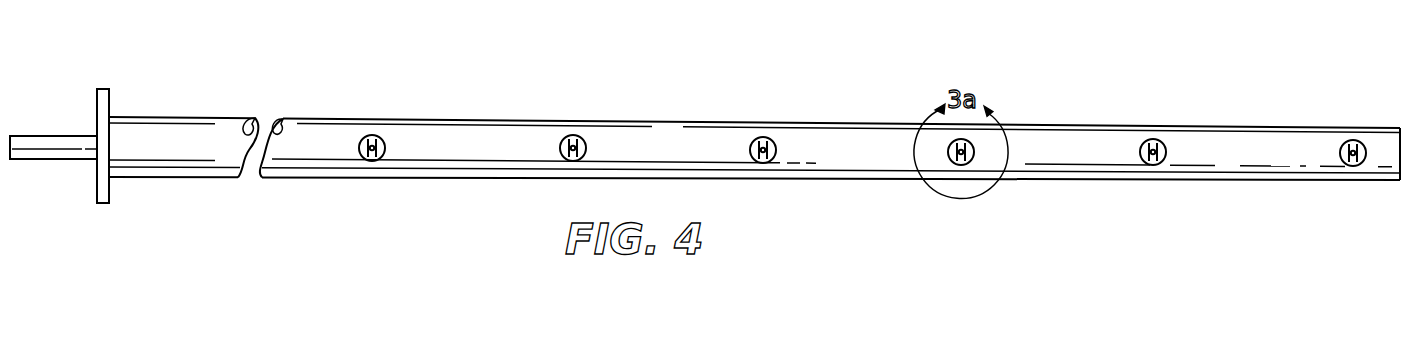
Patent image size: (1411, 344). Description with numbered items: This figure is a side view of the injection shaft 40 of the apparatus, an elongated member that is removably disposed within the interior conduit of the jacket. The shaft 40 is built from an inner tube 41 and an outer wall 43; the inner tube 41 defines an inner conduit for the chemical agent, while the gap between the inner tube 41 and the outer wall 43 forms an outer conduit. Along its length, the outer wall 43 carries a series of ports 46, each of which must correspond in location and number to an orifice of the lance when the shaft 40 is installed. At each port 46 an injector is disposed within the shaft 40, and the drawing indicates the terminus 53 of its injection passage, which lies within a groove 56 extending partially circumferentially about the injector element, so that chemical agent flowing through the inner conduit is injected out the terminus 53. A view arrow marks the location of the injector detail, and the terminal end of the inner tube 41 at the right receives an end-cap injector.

The injection shaft 40 is at (705, 144).
The inner tube 41 is at (1400, 181).
The outer wall 43 is at (870, 162).
The port 46 is at (384, 143).
The terminus 53 is at (364, 138).
The groove 56 is at (763, 163).